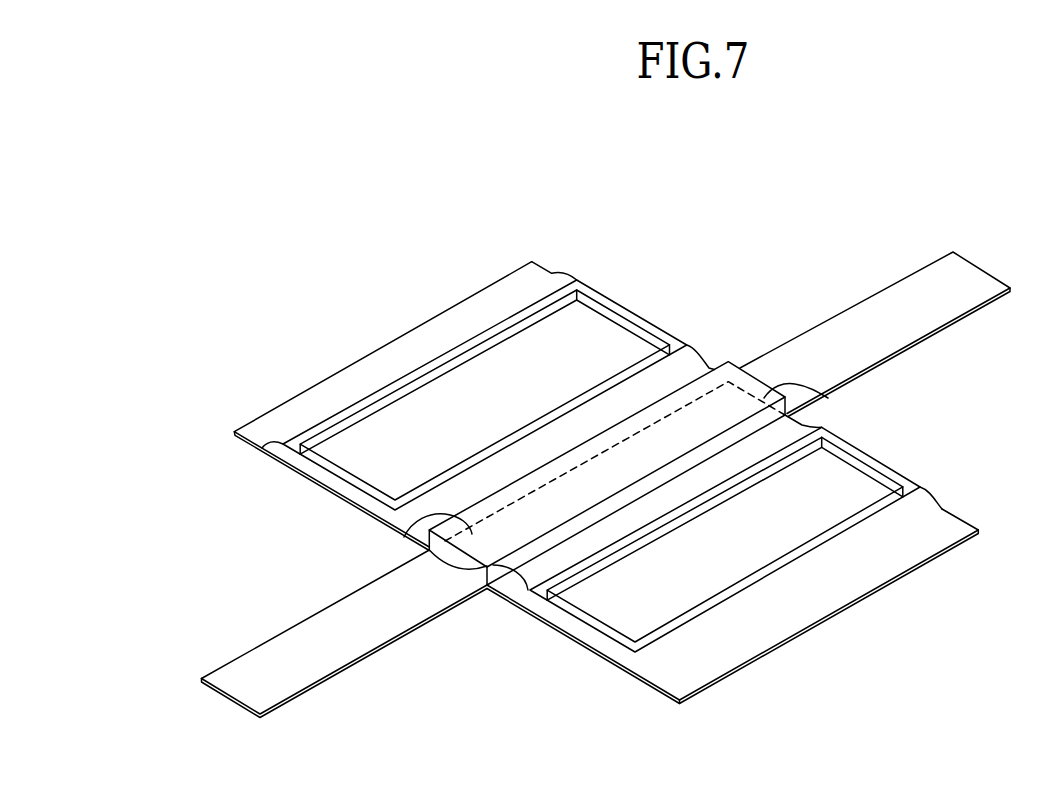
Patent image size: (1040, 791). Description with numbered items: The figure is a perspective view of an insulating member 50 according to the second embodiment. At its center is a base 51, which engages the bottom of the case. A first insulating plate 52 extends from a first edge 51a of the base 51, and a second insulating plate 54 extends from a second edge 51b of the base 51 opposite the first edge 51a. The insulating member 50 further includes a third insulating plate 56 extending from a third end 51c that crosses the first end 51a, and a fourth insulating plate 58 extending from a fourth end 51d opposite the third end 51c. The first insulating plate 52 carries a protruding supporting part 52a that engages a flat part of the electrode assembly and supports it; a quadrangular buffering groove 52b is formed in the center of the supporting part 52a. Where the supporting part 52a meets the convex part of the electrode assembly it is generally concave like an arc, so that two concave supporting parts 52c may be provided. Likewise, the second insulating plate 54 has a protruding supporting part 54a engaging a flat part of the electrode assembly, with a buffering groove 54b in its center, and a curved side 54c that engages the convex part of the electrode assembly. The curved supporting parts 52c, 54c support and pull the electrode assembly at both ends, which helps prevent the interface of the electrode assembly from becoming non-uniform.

The insulating member 50 is at (784, 288).
The base 51 is at (715, 417).
The first edge 51a is at (403, 537).
The second edge 51b is at (528, 590).
The third end 51c is at (462, 568).
The fourth end 51d is at (828, 398).
The first insulating plate 52 is at (415, 340).
The supporting part 52a is at (642, 324).
The buffering groove 52b is at (577, 333).
The concave supporting part 52c is at (272, 443).
The second insulating plate 54 is at (840, 597).
The supporting part 54a is at (898, 480).
The buffering groove 54b is at (837, 517).
The curved supporting part 54c is at (930, 512).
The third insulating plate 56 is at (318, 665).
The fourth insulating plate 58 is at (925, 318).